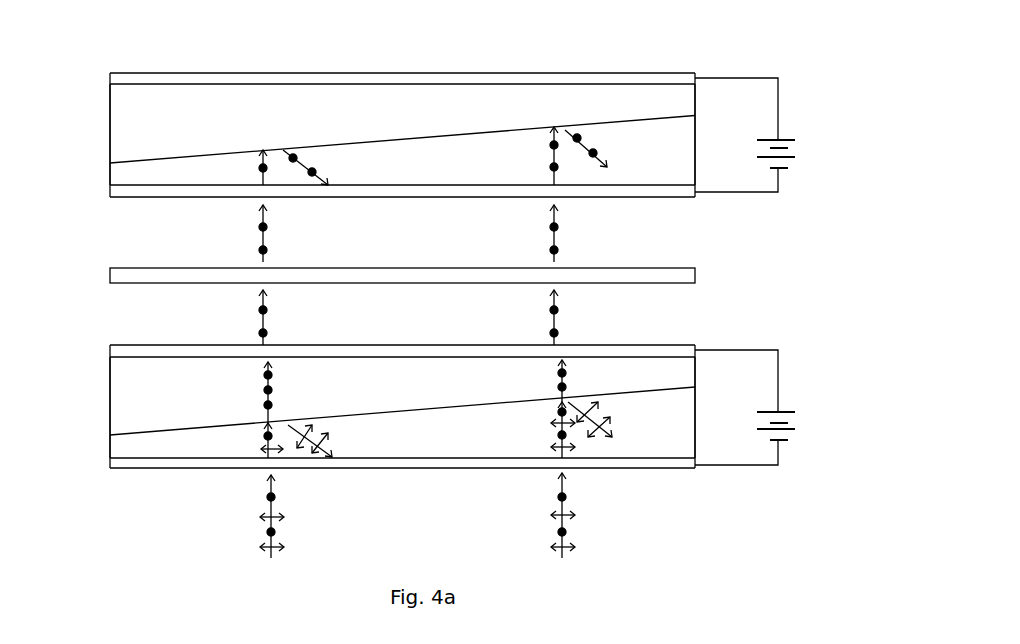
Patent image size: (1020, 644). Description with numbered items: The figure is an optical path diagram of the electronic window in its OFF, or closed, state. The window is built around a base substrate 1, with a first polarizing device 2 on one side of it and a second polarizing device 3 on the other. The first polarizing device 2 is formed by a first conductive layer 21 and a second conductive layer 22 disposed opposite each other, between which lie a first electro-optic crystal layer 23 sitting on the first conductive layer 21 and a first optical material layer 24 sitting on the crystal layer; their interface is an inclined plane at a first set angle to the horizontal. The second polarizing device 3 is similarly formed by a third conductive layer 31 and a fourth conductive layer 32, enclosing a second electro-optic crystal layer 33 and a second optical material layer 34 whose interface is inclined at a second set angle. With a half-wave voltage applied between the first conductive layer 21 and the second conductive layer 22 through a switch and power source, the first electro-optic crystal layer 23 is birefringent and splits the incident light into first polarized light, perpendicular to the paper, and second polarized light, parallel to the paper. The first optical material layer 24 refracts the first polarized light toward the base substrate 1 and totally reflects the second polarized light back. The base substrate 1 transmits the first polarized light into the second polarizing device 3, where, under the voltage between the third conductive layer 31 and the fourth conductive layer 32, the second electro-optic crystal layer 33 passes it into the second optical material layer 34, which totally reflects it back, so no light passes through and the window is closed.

The base substrate 1 is at (688, 275).
The first polarizing device 2 is at (53, 323).
The first conductive layer 21 is at (115, 468).
The second conductive layer 22 is at (120, 355).
The first electro-optic crystal layer 23 is at (115, 447).
The first optical material layer 24 is at (117, 403).
The second polarizing device 3 is at (53, 47).
The third conductive layer 31 is at (115, 197).
The fourth conductive layer 32 is at (120, 83).
The second electro-optic crystal layer 33 is at (113, 175).
The second optical material layer 34 is at (117, 132).